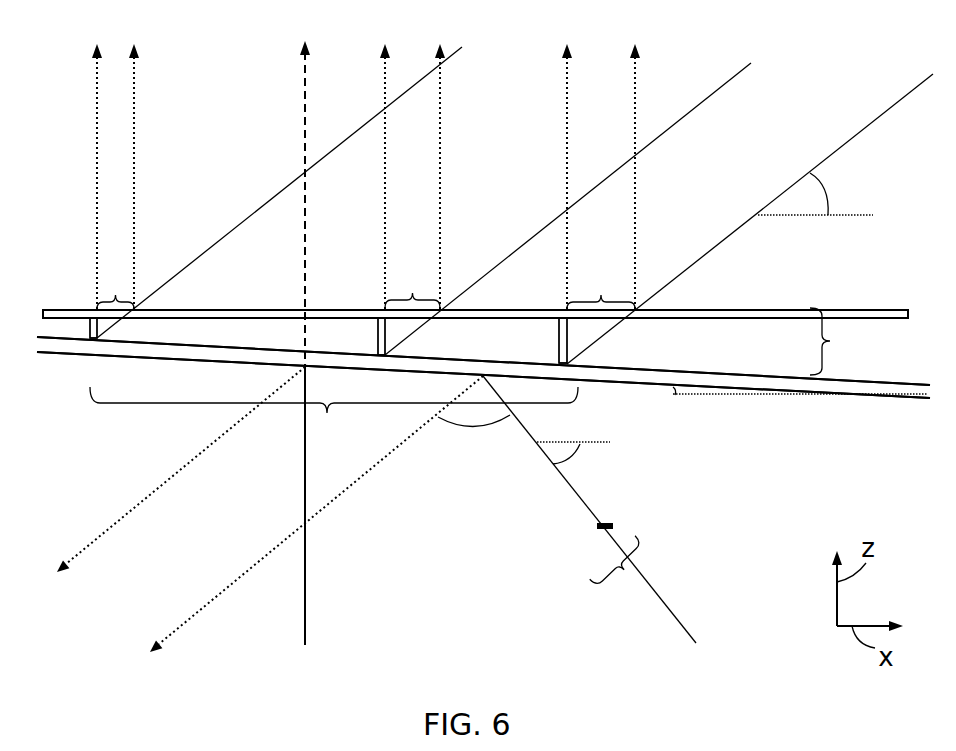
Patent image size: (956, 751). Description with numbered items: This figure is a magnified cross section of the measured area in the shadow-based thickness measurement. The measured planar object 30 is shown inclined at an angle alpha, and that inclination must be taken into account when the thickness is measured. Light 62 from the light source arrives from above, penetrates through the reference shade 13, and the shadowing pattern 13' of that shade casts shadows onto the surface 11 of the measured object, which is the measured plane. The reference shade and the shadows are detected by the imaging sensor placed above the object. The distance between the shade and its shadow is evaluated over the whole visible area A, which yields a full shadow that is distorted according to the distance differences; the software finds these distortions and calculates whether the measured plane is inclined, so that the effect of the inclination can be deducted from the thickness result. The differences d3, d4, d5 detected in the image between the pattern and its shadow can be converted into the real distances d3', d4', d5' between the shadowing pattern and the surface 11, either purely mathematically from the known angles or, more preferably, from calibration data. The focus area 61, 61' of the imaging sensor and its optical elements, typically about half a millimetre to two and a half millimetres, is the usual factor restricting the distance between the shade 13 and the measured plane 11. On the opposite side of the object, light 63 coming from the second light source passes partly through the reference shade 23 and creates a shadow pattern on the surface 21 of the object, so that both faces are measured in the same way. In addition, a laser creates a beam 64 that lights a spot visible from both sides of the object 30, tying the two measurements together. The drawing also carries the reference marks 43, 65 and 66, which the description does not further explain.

The measured plane 11 is at (910, 383).
The reference shade 13 is at (475, 280).
The shadowing pattern 13' is at (419, 316).
The surface 21 is at (918, 400).
The reference shade 23 is at (597, 527).
The measured planar object 30 is at (73, 347).
The axis region 43 is at (304, 372).
The focus area 61 is at (846, 341).
The focus area 61' is at (624, 579).
The light 62 is at (370, 119).
The light 63 is at (678, 617).
The beam 64 is at (307, 602).
The outgoing light rays 65 is at (95, 72).
The reflected light rays 66 is at (87, 550).
The detected difference d3 is at (113, 281).
The detected difference d4 is at (412, 280).
The detected difference d5 is at (601, 281).
The real distance d3' is at (57, 302).
The real distance d4' is at (351, 336).
The real distance d5' is at (534, 340).
The visible area A is at (334, 421).